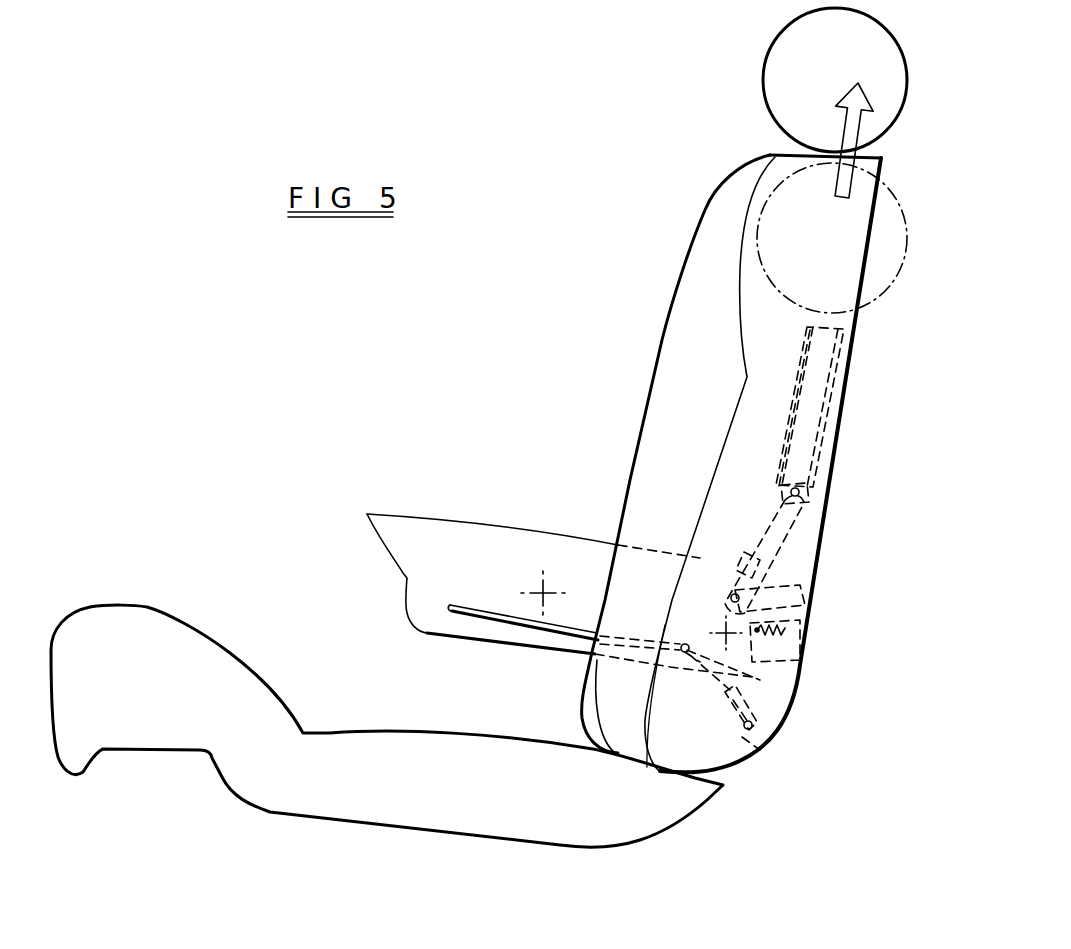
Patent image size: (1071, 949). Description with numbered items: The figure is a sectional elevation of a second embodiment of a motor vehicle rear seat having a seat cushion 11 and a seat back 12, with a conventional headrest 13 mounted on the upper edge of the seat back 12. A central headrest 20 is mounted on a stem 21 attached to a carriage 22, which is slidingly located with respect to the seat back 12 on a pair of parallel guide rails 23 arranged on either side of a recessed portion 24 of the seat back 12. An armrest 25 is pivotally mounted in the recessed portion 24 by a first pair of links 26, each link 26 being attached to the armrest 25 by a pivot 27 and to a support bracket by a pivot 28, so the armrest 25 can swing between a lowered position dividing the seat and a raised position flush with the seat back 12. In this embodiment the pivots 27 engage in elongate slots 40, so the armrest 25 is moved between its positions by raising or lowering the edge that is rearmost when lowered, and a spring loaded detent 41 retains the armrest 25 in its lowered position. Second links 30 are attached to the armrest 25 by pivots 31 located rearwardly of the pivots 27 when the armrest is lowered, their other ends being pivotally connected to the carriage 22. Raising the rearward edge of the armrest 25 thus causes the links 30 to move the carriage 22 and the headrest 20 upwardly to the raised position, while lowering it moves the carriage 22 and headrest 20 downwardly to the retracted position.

The seat cushion 11 is at (147, 623).
The seat back 12 is at (722, 200).
The headrest 13 is at (777, 75).
The central headrest 20 is at (797, 178).
The stem 21 is at (860, 331).
The carriage 22 is at (785, 482).
The guide rails 23 is at (802, 377).
The recessed portion 24 is at (743, 427).
The armrest 25 is at (385, 514).
The first link 26 is at (757, 695).
The pivot 27 is at (681, 650).
The pivot 28 is at (760, 750).
The second link 30 is at (770, 550).
The pivot 31 is at (803, 625).
The elongate slot 40 is at (493, 623).
The spring loaded detent 41 is at (805, 592).